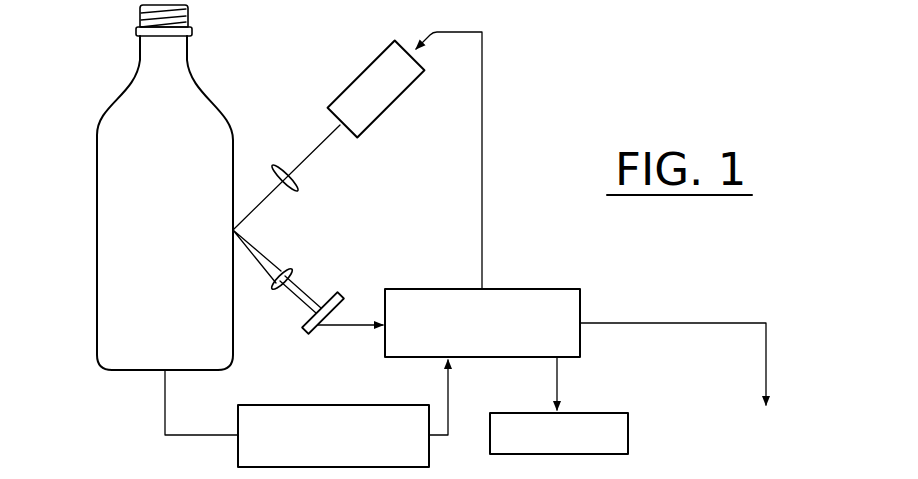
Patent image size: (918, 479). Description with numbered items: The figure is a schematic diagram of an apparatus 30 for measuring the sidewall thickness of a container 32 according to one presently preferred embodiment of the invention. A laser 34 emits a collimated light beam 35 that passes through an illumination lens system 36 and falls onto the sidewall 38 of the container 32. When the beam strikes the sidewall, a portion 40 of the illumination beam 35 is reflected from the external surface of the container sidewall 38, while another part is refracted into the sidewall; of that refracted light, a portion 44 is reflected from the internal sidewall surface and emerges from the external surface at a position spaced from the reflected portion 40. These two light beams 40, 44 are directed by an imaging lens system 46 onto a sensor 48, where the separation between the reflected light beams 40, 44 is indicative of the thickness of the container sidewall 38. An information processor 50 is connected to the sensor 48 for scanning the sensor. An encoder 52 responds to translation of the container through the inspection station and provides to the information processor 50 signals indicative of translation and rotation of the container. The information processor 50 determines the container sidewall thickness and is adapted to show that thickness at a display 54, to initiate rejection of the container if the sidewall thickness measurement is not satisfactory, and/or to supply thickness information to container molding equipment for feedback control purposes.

The apparatus 30 is at (556, 98).
The container 32 is at (95, 150).
The laser 34 is at (387, 111).
The collimated light beam 35 is at (260, 203).
The illumination lens system 36 is at (273, 167).
The sidewall 38 is at (102, 319).
The reflected portion of illumination beam 40 is at (262, 250).
The reflected portion from internal sidewall surface 44 is at (268, 277).
The imaging lens system 46 is at (295, 265).
The sensor 48 is at (338, 297).
The information processor 50 is at (553, 289).
The encoder 52 is at (328, 404).
The display 54 is at (605, 413).